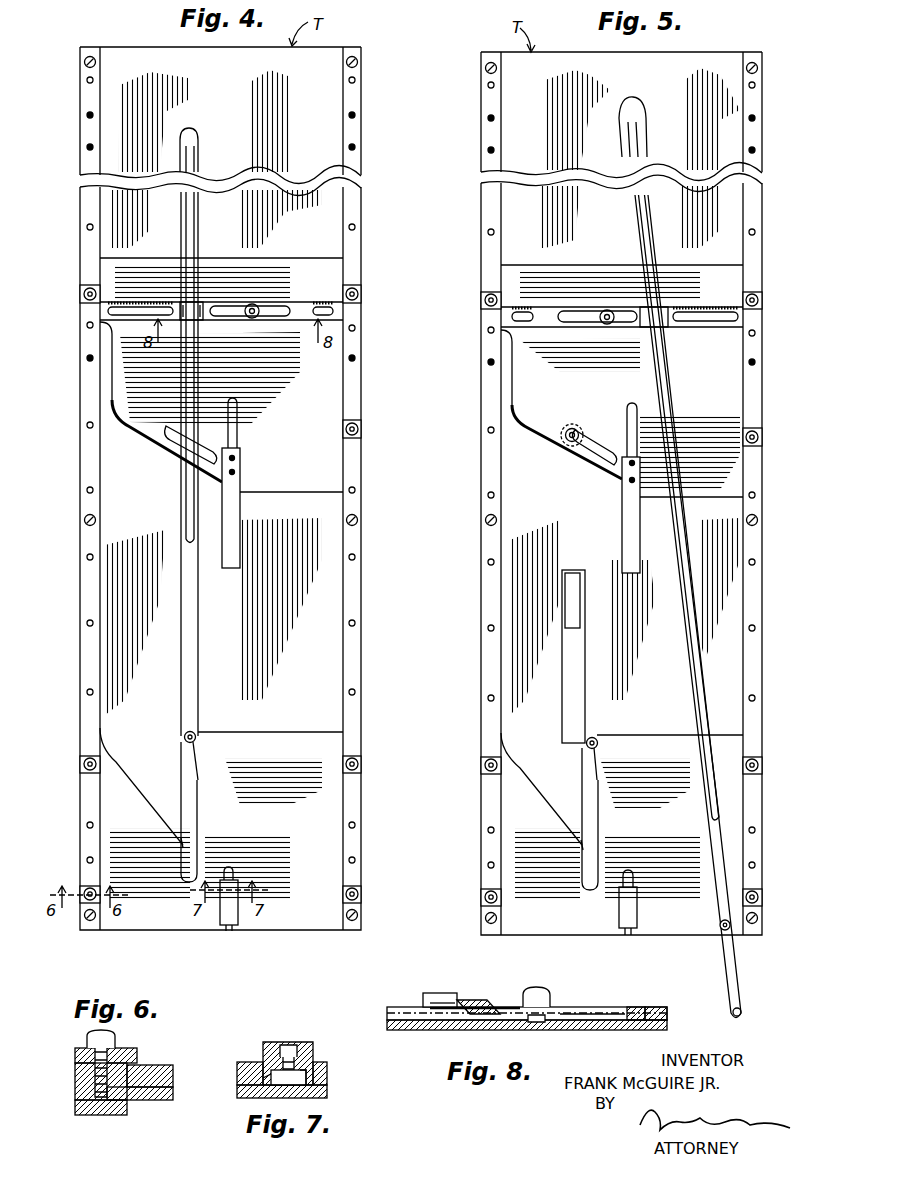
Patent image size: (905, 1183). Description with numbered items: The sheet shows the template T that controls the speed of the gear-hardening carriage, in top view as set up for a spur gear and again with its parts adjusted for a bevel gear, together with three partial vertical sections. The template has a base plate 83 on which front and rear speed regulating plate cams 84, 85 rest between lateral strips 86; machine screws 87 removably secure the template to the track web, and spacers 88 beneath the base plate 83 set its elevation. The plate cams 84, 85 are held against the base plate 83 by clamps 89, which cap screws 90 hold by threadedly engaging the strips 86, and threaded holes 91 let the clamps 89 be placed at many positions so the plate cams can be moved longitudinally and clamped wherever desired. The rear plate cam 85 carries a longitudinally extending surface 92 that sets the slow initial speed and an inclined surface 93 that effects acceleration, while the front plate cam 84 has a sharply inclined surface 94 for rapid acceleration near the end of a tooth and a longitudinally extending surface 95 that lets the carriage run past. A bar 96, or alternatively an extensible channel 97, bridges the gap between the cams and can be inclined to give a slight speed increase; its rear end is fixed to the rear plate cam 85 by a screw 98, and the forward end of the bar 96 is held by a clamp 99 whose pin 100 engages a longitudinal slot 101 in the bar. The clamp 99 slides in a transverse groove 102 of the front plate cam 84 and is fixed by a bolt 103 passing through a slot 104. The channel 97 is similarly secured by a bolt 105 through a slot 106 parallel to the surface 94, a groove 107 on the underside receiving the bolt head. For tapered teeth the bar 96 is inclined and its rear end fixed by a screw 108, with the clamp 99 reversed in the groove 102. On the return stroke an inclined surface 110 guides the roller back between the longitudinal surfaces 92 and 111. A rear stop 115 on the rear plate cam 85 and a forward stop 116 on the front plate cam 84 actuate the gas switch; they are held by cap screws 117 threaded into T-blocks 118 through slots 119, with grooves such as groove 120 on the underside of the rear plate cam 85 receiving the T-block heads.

In FIG. 4, the base plate 83 is at (290, 110).
In FIG. 5, the base plate 83 is at (720, 110).
In FIG. 6, the base plate 83 is at (152, 1100).
In FIG. 7, the base plate 83 is at (282, 1091).
In FIG. 8, the base plate 83 is at (418, 1031).
In FIG. 4, the front plate cam 84 is at (302, 494).
In FIG. 5, the front plate cam 84 is at (601, 266).
In FIG. 8, the front plate cam 84 is at (636, 1021).
In FIG. 4, the rear plate cam 85 is at (268, 746).
In FIG. 5, the rear plate cam 85 is at (652, 748).
In FIG. 6, the rear plate cam 85 is at (150, 1065).
In FIG. 7, the rear plate cam 85 is at (243, 1073).
In FIG. 4, the lateral strips 86 is at (88, 101).
In FIG. 5, the lateral strips 86 is at (490, 101).
In FIG. 6, the lateral strips 86 is at (76, 1073).
In FIG. 8, the lateral strips 86 is at (657, 1007).
In FIG. 4, the machine screws 87 is at (84, 63).
In FIG. 5, the machine screws 87 is at (485, 68).
In FIG. 6, the spacers 88 is at (103, 1115).
In FIG. 4, the clamps 89 is at (94, 285).
In FIG. 5, the clamps 89 is at (486, 301).
In FIG. 6, the clamps 89 is at (130, 1048).
In FIG. 4, the cap screws 90 is at (84, 296).
In FIG. 5, the cap screws 90 is at (486, 292).
In FIG. 6, the cap screws 90 is at (90, 1037).
In FIG. 4, the threaded holes 91 is at (88, 147).
In FIG. 5, the threaded holes 91 is at (489, 150).
In FIG. 4, the longitudinally extending surface 92 is at (197, 796).
In FIG. 5, the longitudinally extending surface 92 is at (590, 806).
In FIG. 4, the inclined surface 93 is at (192, 762).
In FIG. 5, the inclined surface 93 is at (590, 768).
In FIG. 4, the sharply inclined surface 94 is at (140, 440).
In FIG. 5, the sharply inclined surface 94 is at (528, 426).
In FIG. 4, the longitudinally extending surface 95 is at (112, 396).
In FIG. 5, the longitudinally extending surface 95 is at (512, 371).
In FIG. 4, the bar 96 is at (199, 150).
In FIG. 5, the bar 96 is at (630, 120).
In FIG. 8, the bar 96 is at (455, 1010).
In FIG. 5, the extensible channel 97 is at (586, 658).
In FIG. 4, the screw 98 is at (184, 738).
In FIG. 5, the screw 98 is at (593, 738).
In FIG. 4, the clamp 99 is at (299, 318).
In FIG. 5, the clamp 99 is at (633, 322).
In FIG. 8, the clamp 99 is at (470, 998).
In FIG. 4, the pin 100 is at (184, 306).
In FIG. 5, the pin 100 is at (664, 312).
In FIG. 8, the pin 100 is at (437, 1008).
In FIG. 4, the longitudinal slot 101 is at (196, 330).
In FIG. 5, the longitudinal slot 101 is at (666, 385).
In FIG. 8, the longitudinal slot 101 is at (424, 1000).
In FIG. 4, the transverse groove 102 is at (130, 306).
In FIG. 5, the transverse groove 102 is at (716, 324).
In FIG. 8, the transverse groove 102 is at (634, 1007).
In FIG. 4, the bolt 103 is at (255, 308).
In FIG. 5, the bolt 103 is at (605, 310).
In FIG. 8, the bolt 103 is at (551, 998).
In FIG. 4, the slot 104 is at (126, 318).
In FIG. 5, the slot 104 is at (690, 322).
In FIG. 8, the slot 104 is at (618, 1021).
In FIG. 5, the bolt 105 is at (577, 432).
In FIG. 4, the slot 106 is at (212, 454).
In FIG. 5, the slot 106 is at (604, 452).
In FIG. 5, the groove 107 is at (570, 424).
In FIG. 5, the screw 108 is at (721, 930).
In FIG. 4, the inclined surface 110 is at (112, 748).
In FIG. 5, the inclined surface 110 is at (522, 792).
In FIG. 4, the longitudinal surface 111 is at (180, 842).
In FIG. 5, the longitudinal surface 111 is at (580, 862).
In FIG. 4, the rear stop 115 is at (236, 920).
In FIG. 5, the rear stop 115 is at (628, 907).
In FIG. 7, the rear stop 115 is at (264, 1048).
In FIG. 4, the forward stop 116 is at (241, 519).
In FIG. 5, the forward stop 116 is at (623, 538).
In FIG. 4, the cap screws 117 is at (236, 472).
In FIG. 5, the cap screws 117 is at (628, 480).
In FIG. 7, the cap screws 117 is at (290, 1046).
In FIG. 7, the T-blocks 118 is at (310, 1072).
In FIG. 4, the slots 119 is at (238, 432).
In FIG. 5, the slots 119 is at (633, 412).
In FIG. 7, the slots 119 is at (308, 1062).
In FIG. 7, the groove 120 is at (250, 1098).